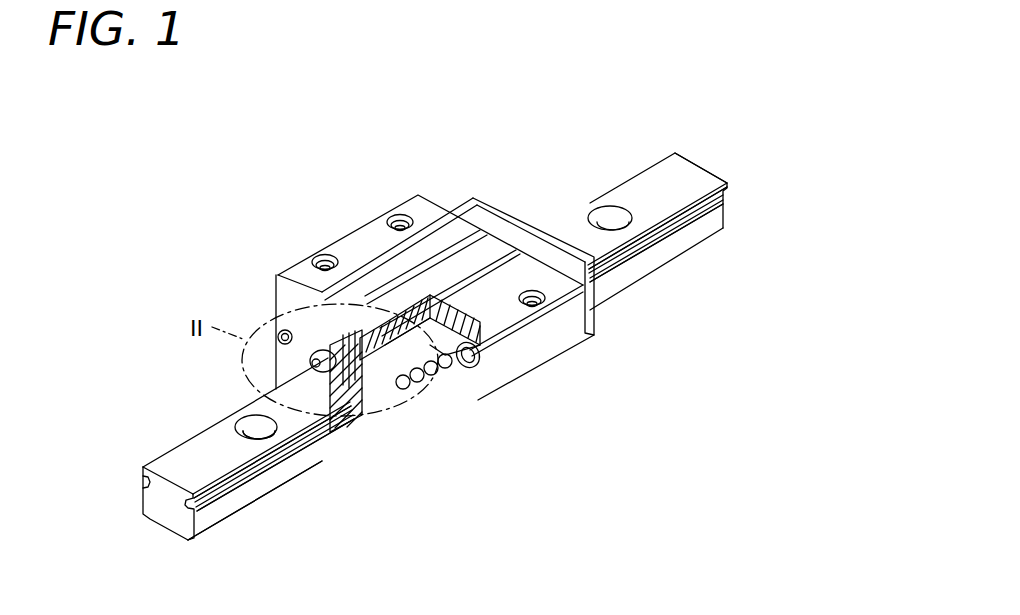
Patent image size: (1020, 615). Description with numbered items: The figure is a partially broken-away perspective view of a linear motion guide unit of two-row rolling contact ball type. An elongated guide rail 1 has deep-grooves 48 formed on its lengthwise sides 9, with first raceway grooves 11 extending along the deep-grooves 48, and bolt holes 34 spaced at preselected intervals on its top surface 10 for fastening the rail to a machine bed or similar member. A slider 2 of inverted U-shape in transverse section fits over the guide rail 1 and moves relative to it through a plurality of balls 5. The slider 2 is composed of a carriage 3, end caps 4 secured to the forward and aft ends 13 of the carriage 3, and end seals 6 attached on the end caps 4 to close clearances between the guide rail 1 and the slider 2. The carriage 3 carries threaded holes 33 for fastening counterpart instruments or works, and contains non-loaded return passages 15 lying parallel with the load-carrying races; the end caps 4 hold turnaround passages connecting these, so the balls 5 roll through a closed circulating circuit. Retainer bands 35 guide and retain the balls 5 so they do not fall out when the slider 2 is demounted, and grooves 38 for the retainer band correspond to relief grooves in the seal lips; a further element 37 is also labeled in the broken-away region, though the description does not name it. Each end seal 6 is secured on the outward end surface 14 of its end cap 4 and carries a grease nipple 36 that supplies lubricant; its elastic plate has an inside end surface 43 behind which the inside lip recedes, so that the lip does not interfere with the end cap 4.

The guide rail 1 is at (207, 447).
The slider 2 is at (383, 312).
The carriage 3 is at (436, 270).
The end cap 4 is at (308, 290).
The ball 5 is at (420, 388).
The end seal 6 is at (268, 342).
The lengthwise sides 9 is at (238, 508).
The top surface 10 is at (182, 455).
The first raceway grooves 11 is at (300, 443).
The forward and aft ends 13 is at (322, 318).
The outward end surface 14 is at (282, 338).
The return passages 15 is at (481, 370).
The threaded holes 33 is at (397, 216).
The bolt holes 34 is at (272, 440).
The retainer bands 35 is at (385, 425).
The grease nipple 36 is at (313, 358).
The ball retainer 37 is at (452, 392).
The grooves for the retainer band 38 is at (268, 432).
The inside end surface 43 is at (358, 412).
The deep-grooves 48 is at (262, 545).